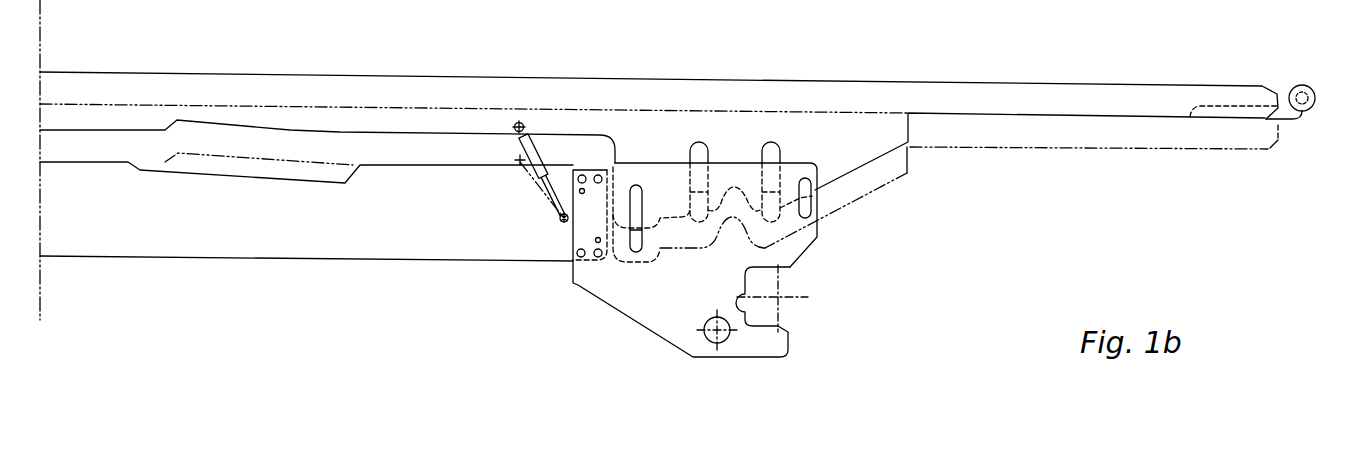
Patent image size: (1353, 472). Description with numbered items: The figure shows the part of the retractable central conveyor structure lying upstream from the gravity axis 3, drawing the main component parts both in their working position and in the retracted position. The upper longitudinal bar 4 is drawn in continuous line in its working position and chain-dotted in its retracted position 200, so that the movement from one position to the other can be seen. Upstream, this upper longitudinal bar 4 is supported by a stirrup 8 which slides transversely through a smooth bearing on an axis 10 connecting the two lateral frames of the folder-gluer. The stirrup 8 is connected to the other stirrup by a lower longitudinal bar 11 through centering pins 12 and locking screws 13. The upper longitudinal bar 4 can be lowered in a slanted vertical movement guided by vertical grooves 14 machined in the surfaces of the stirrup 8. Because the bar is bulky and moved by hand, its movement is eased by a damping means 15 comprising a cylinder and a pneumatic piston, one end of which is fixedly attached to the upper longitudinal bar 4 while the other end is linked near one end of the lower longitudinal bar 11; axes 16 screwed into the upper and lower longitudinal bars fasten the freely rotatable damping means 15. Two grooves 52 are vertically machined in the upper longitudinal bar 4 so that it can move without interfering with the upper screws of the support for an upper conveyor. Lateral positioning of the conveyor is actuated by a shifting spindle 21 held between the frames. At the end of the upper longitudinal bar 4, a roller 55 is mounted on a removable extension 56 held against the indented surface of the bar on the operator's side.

The gravity axis 3 is at (42, 30).
The retracted position 200 is at (290, 104).
The lower longitudinal bar 11 is at (378, 234).
The upper longitudinal bar 4 is at (860, 143).
The vertical grooves 14 is at (636, 185).
The grooves 52 is at (700, 150).
The stirrup 8 is at (650, 297).
The locking screws 13 is at (598, 257).
The centering pins 12 is at (597, 240).
The damping means 15 is at (515, 132).
The axes 16 is at (566, 168).
The shifting spindle 21 is at (706, 337).
The axis 10 is at (785, 296).
The roller 55 is at (1313, 106).
The removable extension 56 is at (1282, 112).